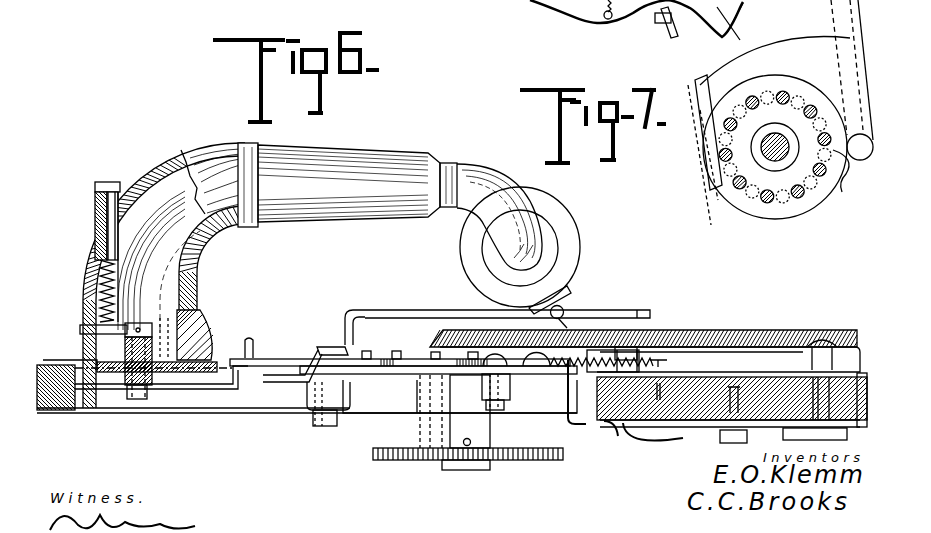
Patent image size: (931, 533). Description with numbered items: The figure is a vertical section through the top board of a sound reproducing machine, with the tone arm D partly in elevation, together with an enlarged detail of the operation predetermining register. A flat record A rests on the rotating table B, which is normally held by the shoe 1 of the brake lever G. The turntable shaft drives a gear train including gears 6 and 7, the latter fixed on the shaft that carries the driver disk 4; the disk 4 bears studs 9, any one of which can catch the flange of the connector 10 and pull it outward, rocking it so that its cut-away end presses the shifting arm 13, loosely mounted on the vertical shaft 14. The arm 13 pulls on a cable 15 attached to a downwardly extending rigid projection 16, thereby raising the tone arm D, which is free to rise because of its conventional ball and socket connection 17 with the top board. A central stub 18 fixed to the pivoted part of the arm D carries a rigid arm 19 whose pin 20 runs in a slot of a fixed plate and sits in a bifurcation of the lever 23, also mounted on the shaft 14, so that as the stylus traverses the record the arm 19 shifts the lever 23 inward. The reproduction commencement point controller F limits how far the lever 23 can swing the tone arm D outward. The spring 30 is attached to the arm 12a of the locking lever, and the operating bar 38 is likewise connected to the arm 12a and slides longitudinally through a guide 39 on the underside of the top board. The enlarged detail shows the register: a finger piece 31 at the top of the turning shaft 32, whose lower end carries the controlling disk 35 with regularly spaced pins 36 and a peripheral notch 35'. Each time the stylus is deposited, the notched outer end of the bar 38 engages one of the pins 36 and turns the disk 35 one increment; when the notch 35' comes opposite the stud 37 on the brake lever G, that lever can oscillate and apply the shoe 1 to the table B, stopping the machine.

In FIG. 6, the tone arm D is at (392, 134).
In FIG. 6, the central stub 18 is at (152, 324).
In FIG. 6, the ball and socket connection 17 is at (207, 332).
In FIG. 6, the rigid projection 16 is at (92, 406).
In FIG. 6, the cable 15 is at (172, 410).
In FIG. 6, the rigid arm 19 is at (216, 390).
In FIG. 6, the arm of locking lever 12a is at (530, 368).
In FIG. 6, the pin 20 is at (256, 342).
In FIG. 6, the lever 23 is at (310, 349).
In FIG. 6, the vertical shaft 14 is at (300, 390).
In FIG. 6, the reproduction commencement point controller F is at (365, 316).
In FIG. 6, the guide 39 is at (622, 316).
In FIG. 7, the guide 39 is at (657, 26).
In FIG. 6, the studs 9 is at (473, 352).
In FIG. 6, the connector 10 is at (418, 352).
In FIG. 6, the driver disk 4 is at (488, 362).
In FIG. 6, the gear 7 is at (436, 462).
In FIG. 6, the gear 6 is at (405, 460).
In FIG. 6, the shifting arm 13 is at (465, 472).
In FIG. 6, the brake shoe 1 is at (615, 358).
In FIG. 6, the spring 30 is at (574, 424).
In FIG. 6, the operating bar 38 is at (612, 427).
In FIG. 7, the operating bar 38 is at (775, 61).
In FIG. 6, the brake lever G is at (660, 428).
In FIG. 7, the brake lever G is at (829, 67).
In FIG. 6, the record A is at (688, 330).
In FIG. 6, the rotating table B is at (722, 345).
In FIG. 7, the rotating table B is at (740, 27).
In FIG. 6, the pins 36 is at (800, 410).
In FIG. 7, the pins 36 is at (758, 198).
In FIG. 6, the finger piece 31 is at (815, 346).
In FIG. 6, the controlling disk 35 is at (779, 447).
In FIG. 7, the turning shaft 32 is at (780, 152).
In FIG. 7, the stud 37 is at (856, 145).
In FIG. 7, the notch 35' is at (846, 193).